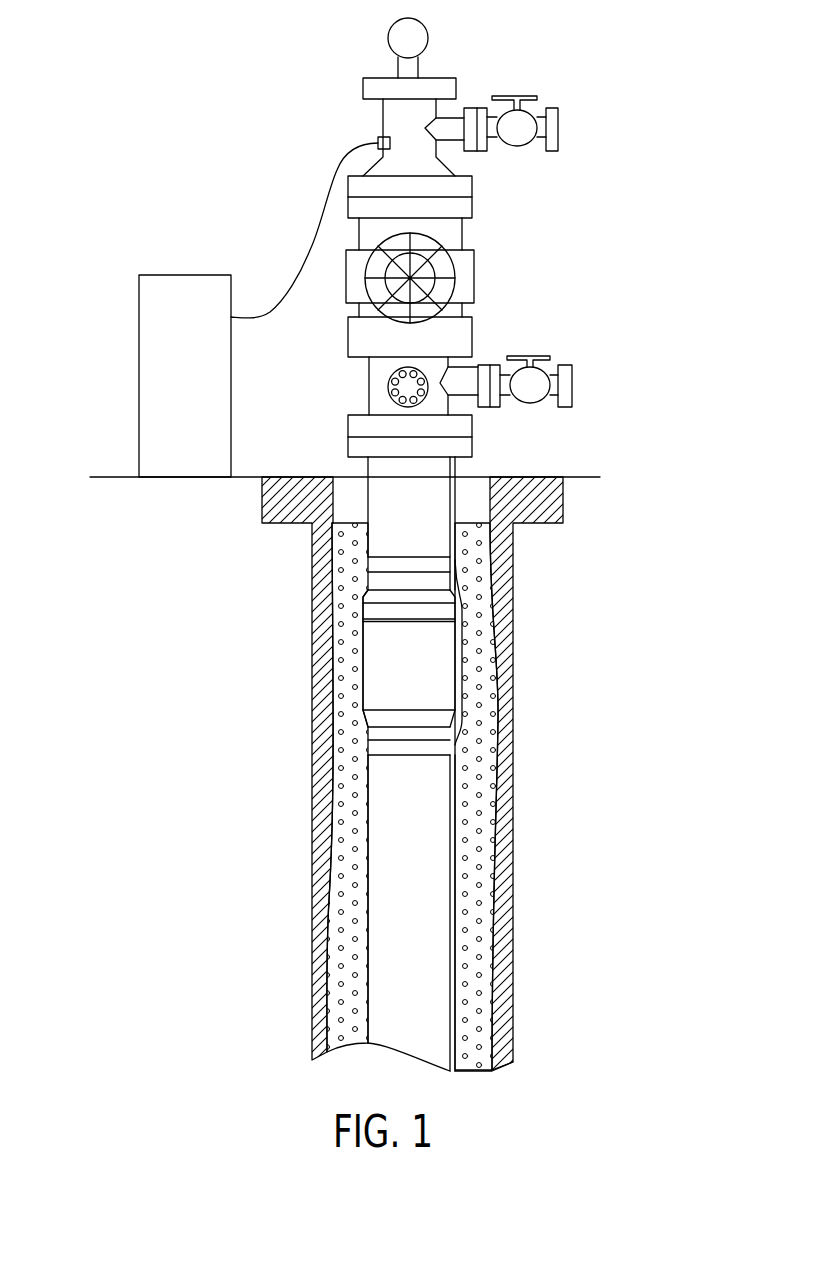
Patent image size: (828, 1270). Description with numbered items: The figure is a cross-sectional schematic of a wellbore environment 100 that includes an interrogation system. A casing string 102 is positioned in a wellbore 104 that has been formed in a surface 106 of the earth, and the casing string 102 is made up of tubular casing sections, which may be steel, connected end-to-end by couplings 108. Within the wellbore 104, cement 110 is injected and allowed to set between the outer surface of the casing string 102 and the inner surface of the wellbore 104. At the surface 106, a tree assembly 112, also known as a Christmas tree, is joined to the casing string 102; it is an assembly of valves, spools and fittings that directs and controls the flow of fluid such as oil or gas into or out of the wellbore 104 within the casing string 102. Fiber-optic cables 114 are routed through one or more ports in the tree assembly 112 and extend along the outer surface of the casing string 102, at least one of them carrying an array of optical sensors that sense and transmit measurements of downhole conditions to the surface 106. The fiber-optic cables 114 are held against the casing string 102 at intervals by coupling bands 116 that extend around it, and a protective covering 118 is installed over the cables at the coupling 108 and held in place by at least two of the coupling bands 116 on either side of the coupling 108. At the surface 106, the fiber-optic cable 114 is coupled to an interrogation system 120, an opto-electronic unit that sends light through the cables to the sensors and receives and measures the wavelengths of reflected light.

The wellbore environment 100 is at (212, 147).
The casing string 102 is at (450, 473).
The wellbore 104 is at (345, 508).
The surface 106 is at (104, 477).
The coupling 108 is at (445, 686).
The cement 110 is at (467, 958).
The tree assembly 112 is at (593, 10).
The fiber-optic cable 114 is at (315, 243).
The coupling band 116 is at (393, 555).
The protective covering 118 is at (462, 638).
The interrogation system 120 is at (139, 385).